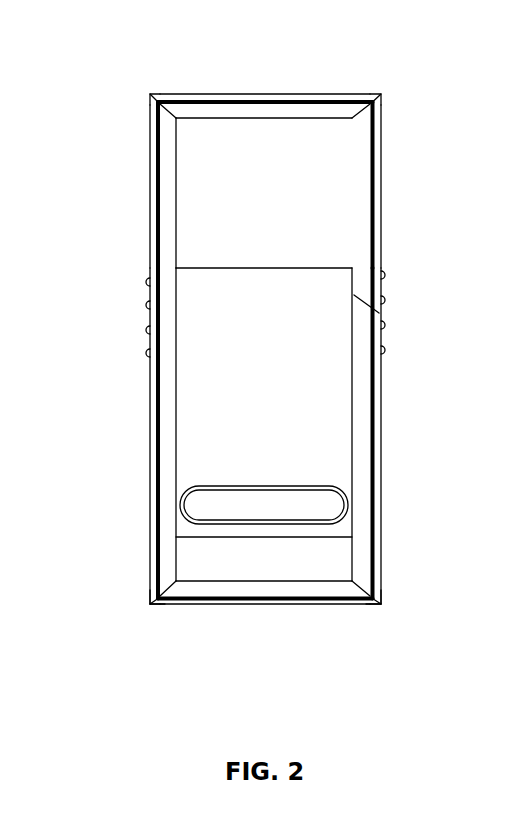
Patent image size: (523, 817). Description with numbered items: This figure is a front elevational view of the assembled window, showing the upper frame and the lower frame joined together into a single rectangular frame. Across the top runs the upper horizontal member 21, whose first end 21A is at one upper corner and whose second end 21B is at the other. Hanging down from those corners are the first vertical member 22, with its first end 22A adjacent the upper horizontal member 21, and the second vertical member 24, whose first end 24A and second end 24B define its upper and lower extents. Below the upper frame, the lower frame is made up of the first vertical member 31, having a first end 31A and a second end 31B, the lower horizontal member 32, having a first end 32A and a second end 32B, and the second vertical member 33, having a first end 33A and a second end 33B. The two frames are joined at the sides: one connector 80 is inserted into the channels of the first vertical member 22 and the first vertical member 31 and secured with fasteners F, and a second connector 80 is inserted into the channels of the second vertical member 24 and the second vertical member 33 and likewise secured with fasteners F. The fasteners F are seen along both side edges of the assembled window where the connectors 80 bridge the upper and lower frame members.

The upper horizontal member 21 is at (263, 108).
The first end of upper horizontal member 21A is at (366, 94).
The second end of upper horizontal member 21B is at (160, 103).
The first vertical member 22 is at (367, 233).
The first end of first vertical member 22A is at (375, 112).
The second vertical member 24 is at (162, 198).
The first end of second vertical member 24A is at (167, 260).
The second end of second vertical member 24B is at (156, 117).
The first vertical member 31 is at (376, 428).
The first end of first vertical member 31A is at (361, 322).
The second end of first vertical member 31B is at (378, 594).
The lower horizontal member 32 is at (280, 604).
The first end of lower horizontal member 32A is at (368, 604).
The second end of lower horizontal member 32B is at (165, 601).
The second vertical member 33 is at (158, 453).
The first end of second vertical member 33A is at (158, 592).
The second end of second vertical member 33B is at (165, 321).
The connector 80 is at (136, 317).
The fastener F is at (147, 282).